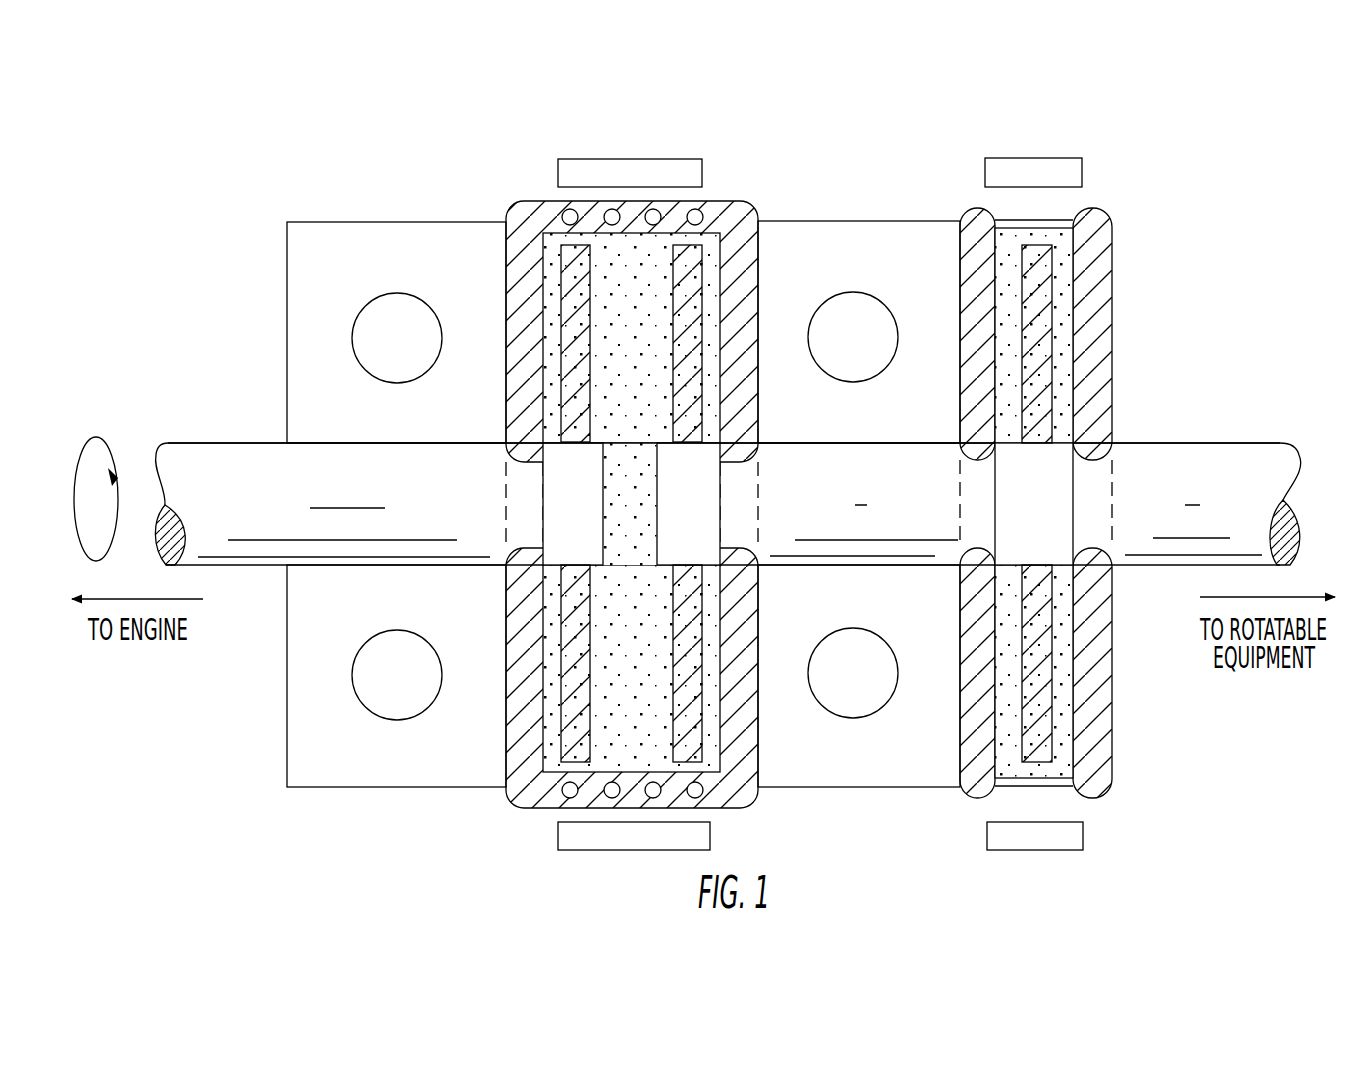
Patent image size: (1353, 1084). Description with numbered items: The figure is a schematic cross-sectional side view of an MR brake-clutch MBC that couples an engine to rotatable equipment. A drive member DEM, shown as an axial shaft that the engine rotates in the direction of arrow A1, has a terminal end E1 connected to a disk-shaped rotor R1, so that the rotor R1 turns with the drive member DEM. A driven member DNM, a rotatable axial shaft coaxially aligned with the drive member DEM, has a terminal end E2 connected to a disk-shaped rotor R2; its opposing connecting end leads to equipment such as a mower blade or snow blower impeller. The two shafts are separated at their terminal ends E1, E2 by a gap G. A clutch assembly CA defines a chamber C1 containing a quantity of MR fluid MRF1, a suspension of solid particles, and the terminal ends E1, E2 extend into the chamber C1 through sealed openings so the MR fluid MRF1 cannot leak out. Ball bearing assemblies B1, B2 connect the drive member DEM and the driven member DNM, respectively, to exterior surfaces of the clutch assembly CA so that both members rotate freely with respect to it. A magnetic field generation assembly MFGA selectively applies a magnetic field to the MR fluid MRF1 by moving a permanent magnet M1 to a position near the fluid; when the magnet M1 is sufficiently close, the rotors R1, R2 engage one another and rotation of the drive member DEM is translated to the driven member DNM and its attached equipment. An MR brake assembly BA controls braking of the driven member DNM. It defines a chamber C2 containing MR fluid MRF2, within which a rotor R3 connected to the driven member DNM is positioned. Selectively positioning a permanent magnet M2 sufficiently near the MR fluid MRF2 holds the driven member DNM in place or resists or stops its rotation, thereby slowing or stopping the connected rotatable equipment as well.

The MR brake-clutch MBC is at (208, 186).
The magnetic field generation assembly MFGA is at (416, 184).
The ball bearing assembly B1 is at (287, 222).
The ball bearing assembly B2 is at (880, 221).
The clutch assembly CA is at (511, 203).
The rotor R1 is at (555, 217).
The rotor R2 is at (707, 208).
The rotor R3 is at (1043, 750).
The terminal end E1 is at (601, 441).
The terminal end E2 is at (661, 441).
The gap G is at (627, 422).
The permanent magnet M1 is at (588, 159).
The permanent magnet M2 is at (1022, 158).
The chamber C1 is at (645, 776).
The chamber C2 is at (1062, 228).
The MR brake assembly BA is at (1093, 208).
The direction arrow A1 is at (82, 455).
The drive member DEM is at (190, 443).
The driven member DNM is at (1290, 443).
The MR fluid MRF1 is at (618, 765).
The MR fluid MRF2 is at (1033, 768).